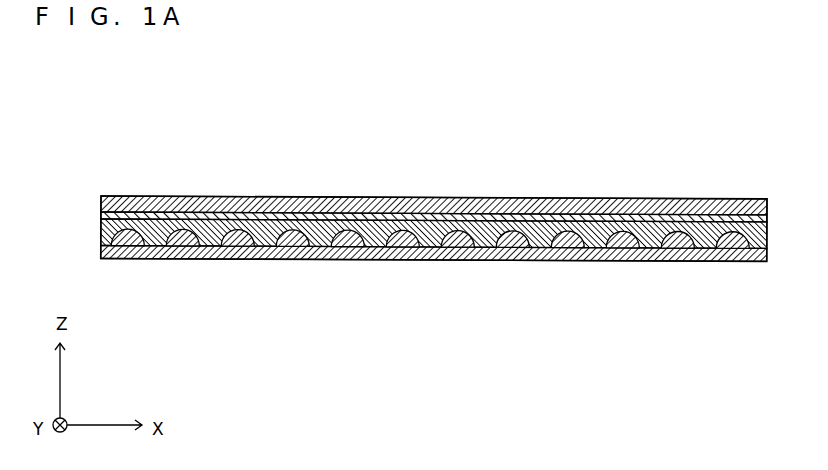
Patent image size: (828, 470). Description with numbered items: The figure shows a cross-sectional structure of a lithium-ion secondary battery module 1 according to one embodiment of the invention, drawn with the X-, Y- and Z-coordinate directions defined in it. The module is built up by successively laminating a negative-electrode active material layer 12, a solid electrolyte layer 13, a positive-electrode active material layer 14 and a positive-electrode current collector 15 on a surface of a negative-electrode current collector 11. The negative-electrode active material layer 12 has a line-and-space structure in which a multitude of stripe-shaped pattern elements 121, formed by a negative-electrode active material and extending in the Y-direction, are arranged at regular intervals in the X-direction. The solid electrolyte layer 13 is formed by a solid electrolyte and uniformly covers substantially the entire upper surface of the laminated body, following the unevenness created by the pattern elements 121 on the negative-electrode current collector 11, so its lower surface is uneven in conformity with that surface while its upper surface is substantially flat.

The lithium-ion secondary battery module 1 is at (391, 239).
The negative-electrode current collector 11 is at (305, 260).
The negative-electrode active material layer 12 is at (430, 192).
The stripe-shaped pattern elements 121 is at (627, 232).
The solid electrolyte layer 13 is at (101, 230).
The positive-electrode active material layer 14 is at (101, 216).
The positive-electrode current collector 15 is at (452, 213).